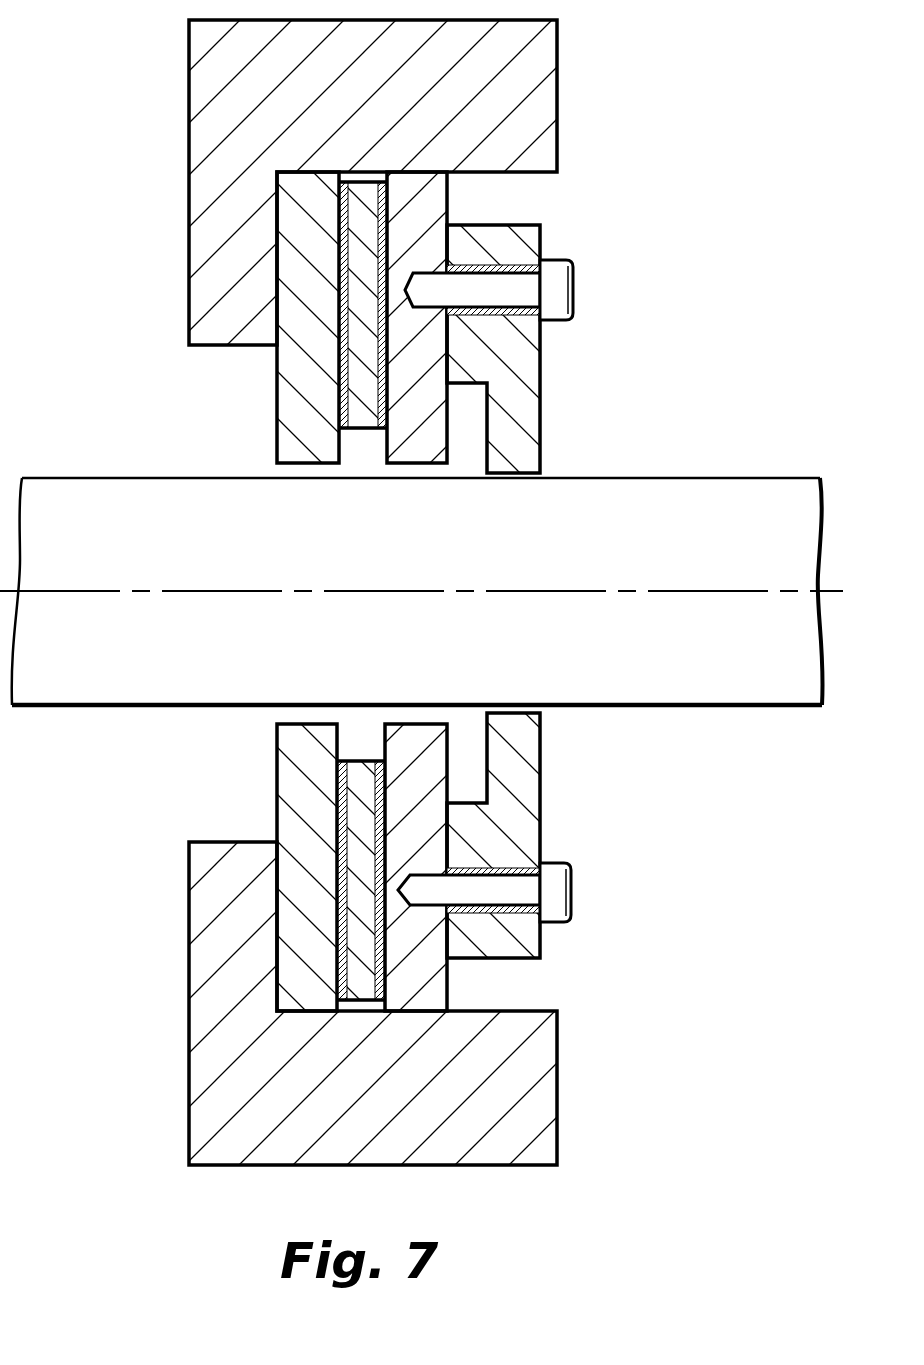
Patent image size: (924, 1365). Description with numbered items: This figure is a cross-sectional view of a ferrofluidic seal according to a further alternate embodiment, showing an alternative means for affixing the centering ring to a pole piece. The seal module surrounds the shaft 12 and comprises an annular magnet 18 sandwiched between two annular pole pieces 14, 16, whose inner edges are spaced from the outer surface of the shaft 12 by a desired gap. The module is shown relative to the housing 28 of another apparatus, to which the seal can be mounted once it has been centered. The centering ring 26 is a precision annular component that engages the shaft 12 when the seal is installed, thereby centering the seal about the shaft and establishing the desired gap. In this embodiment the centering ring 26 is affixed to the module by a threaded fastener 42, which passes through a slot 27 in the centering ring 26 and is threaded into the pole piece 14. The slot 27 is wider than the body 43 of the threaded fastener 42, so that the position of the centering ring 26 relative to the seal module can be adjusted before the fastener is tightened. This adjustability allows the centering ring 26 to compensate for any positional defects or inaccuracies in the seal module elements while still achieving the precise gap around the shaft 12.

The shaft 12 is at (652, 483).
The pole piece 14 is at (388, 246).
The pole piece 16 is at (338, 248).
The annular magnet 18 is at (384, 256).
The centering ring 26 is at (510, 243).
The slot 27 is at (540, 257).
The housing 28 is at (547, 92).
The threaded fastener 42 is at (560, 287).
The body 43 is at (472, 287).